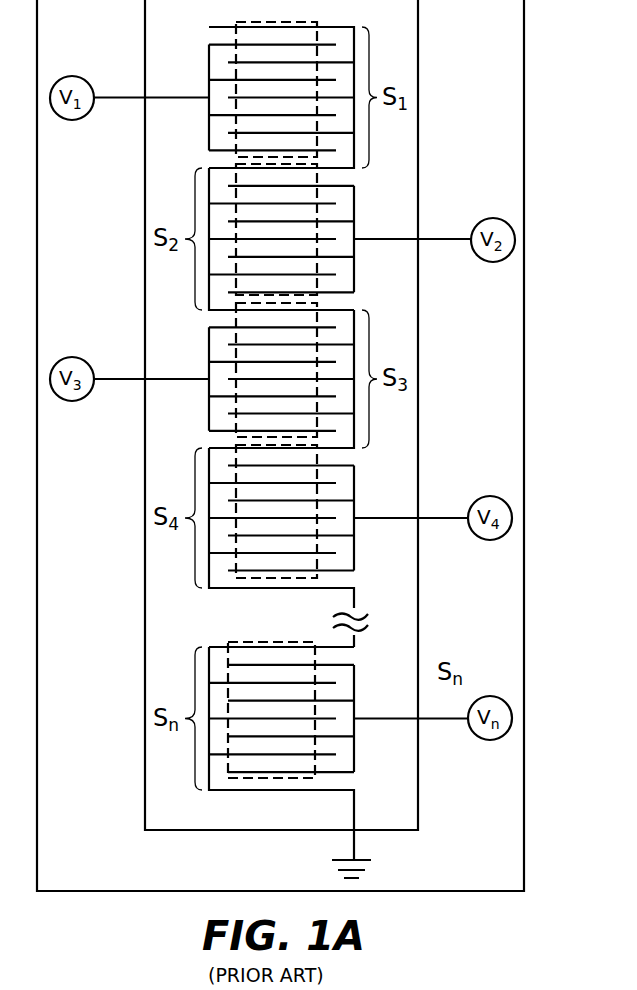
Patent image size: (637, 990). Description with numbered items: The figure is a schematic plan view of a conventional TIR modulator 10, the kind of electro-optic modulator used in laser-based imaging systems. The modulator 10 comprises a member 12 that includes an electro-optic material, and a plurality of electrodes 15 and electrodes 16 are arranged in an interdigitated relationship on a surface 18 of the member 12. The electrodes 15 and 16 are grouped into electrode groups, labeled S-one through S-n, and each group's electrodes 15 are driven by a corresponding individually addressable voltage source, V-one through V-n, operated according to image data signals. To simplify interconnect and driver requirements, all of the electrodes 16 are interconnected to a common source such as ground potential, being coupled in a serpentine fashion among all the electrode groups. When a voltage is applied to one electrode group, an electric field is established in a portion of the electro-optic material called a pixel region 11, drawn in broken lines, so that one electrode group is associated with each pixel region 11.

The TIR modulator 10 is at (440, 788).
The pixel region 11 is at (236, 88).
The member 12 is at (168, 803).
The electrodes 15 is at (228, 62).
The electrodes 16 is at (337, 58).
The surface 18 is at (264, 821).